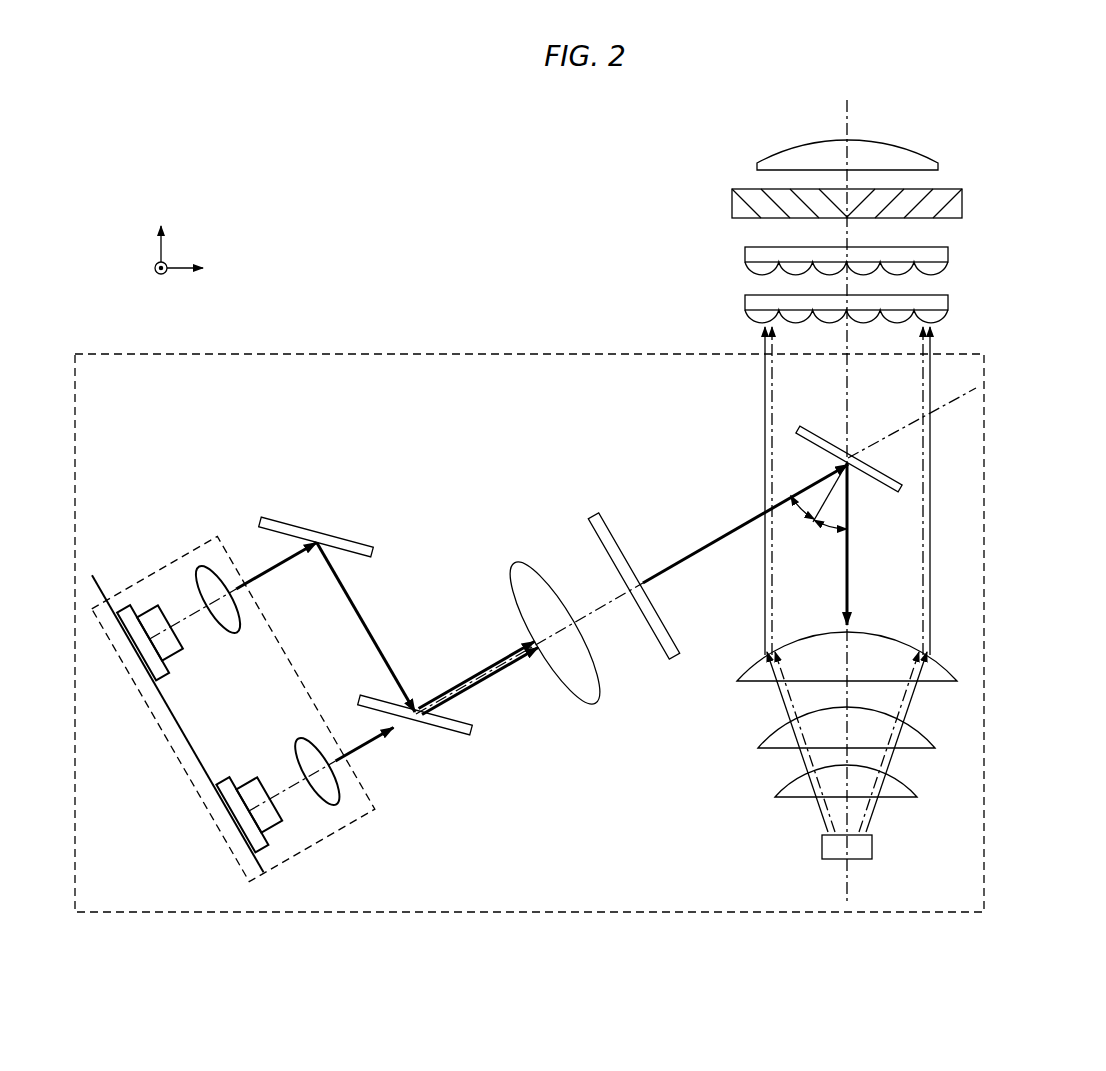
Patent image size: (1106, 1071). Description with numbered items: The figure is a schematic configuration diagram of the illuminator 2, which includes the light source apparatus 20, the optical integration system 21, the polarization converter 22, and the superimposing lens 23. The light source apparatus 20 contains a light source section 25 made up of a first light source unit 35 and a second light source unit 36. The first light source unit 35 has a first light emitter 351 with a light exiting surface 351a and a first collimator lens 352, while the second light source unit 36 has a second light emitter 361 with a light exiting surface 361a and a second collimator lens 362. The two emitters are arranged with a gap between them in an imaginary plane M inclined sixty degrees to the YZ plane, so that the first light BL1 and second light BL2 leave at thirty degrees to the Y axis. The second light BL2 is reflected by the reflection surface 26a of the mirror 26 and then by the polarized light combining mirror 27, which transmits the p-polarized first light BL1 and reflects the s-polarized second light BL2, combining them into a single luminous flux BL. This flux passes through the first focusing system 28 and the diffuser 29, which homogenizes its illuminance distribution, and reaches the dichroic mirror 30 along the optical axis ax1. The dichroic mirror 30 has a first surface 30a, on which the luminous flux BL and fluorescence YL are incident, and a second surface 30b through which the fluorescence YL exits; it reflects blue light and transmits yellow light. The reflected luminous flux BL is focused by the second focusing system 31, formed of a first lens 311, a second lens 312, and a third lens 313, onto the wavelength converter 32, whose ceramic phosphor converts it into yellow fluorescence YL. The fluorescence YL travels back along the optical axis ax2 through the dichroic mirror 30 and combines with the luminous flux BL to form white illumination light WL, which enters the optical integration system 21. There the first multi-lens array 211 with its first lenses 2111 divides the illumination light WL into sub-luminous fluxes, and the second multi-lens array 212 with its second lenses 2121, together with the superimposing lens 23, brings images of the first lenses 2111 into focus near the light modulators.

The illuminator 2 is at (460, 262).
The light source apparatus 20 is at (365, 354).
The optical integration system 21 is at (847, 284).
The first multi-lens array 211 is at (869, 312).
The first lenses 2111 is at (948, 323).
The second multi-lens array 212 is at (869, 261).
The second lenses 2121 is at (948, 273).
The polarization converter 22 is at (732, 205).
The superimposing lens 23 is at (762, 165).
The light source section 25 is at (294, 648).
The mirror 26 is at (353, 519).
The reflection surface 26a is at (362, 556).
The polarized light combining mirror 27 is at (453, 736).
The first focusing system 28 is at (520, 566).
The diffuser 29 is at (615, 530).
The dichroic mirror 30 is at (914, 485).
The first surface 30a is at (887, 492).
The second surface 30b is at (893, 476).
The second focusing system 31 is at (918, 717).
The first lens 311 is at (957, 668).
The second lens 312 is at (930, 735).
The third lens 313 is at (907, 783).
The wavelength converter 32 is at (872, 848).
The first light source unit 35 is at (356, 803).
The first light emitter 351 is at (262, 843).
The light exiting surface 351a is at (267, 780).
The first collimator lens 352 is at (330, 793).
The second light source unit 36 is at (193, 545).
The second light emitter 361 is at (128, 615).
The light exiting surface 361a is at (182, 645).
The second collimator lens 362 is at (203, 570).
The imaginary plane M is at (172, 727).
The luminous flux BL is at (492, 672).
The first light BL1 is at (370, 740).
The second light BL2 is at (270, 569).
The fluorescence YL is at (923, 570).
The illumination light WL is at (923, 491).
The optical axis ax1 is at (976, 389).
The optical axis ax2 is at (843, 128).